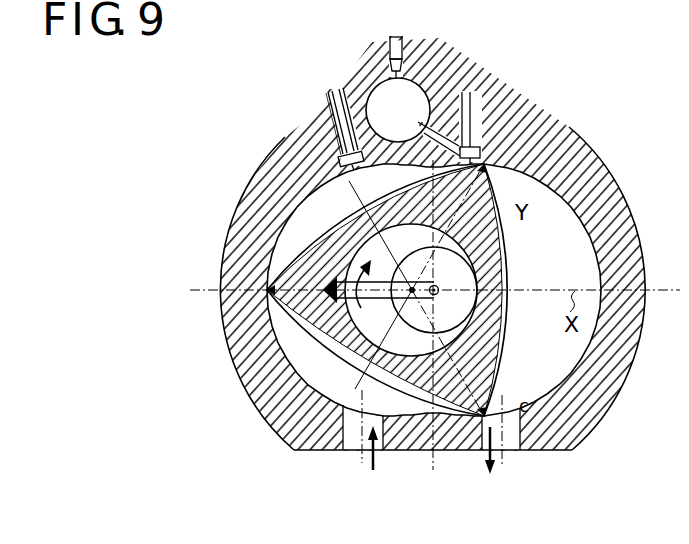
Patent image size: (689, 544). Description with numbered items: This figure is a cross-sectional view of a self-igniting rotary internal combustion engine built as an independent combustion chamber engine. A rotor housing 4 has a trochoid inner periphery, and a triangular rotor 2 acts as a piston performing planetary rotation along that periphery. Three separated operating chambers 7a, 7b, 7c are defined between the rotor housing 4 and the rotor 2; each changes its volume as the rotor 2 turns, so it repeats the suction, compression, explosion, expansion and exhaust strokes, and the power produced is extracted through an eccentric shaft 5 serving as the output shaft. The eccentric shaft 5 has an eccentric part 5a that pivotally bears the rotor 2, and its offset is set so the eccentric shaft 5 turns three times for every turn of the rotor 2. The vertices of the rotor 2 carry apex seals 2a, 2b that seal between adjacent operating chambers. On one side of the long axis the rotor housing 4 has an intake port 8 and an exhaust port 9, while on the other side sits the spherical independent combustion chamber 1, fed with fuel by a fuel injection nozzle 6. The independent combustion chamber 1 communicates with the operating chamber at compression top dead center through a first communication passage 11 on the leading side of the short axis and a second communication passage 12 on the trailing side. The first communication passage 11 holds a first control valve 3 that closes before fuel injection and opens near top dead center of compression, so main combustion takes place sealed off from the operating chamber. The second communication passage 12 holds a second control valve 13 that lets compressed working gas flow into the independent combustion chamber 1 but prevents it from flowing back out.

The independent combustion chamber 1 is at (413, 97).
The rotor 2 is at (490, 358).
The apex seal 2a is at (233, 340).
The apex seal 2b is at (488, 168).
The first control valve 3 is at (478, 97).
The rotor housing 4 is at (566, 140).
The eccentric shaft 5 is at (457, 306).
The eccentric part 5a is at (396, 316).
The fuel injection nozzle 6 is at (399, 37).
The operating chamber 7a is at (324, 366).
The operating chamber 7b is at (333, 223).
The operating chamber 7c is at (578, 283).
The intake port 8 is at (358, 455).
The exhaust port 9 is at (513, 452).
The first communication passage 11 is at (466, 90).
The second communication passage 12 is at (373, 145).
The second control valve 13 is at (337, 115).